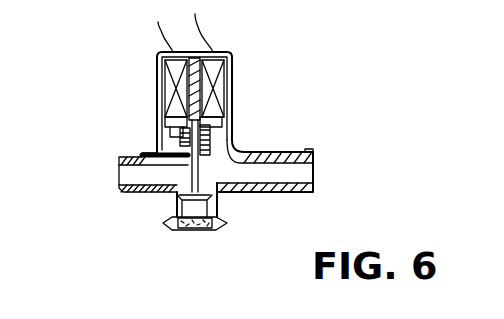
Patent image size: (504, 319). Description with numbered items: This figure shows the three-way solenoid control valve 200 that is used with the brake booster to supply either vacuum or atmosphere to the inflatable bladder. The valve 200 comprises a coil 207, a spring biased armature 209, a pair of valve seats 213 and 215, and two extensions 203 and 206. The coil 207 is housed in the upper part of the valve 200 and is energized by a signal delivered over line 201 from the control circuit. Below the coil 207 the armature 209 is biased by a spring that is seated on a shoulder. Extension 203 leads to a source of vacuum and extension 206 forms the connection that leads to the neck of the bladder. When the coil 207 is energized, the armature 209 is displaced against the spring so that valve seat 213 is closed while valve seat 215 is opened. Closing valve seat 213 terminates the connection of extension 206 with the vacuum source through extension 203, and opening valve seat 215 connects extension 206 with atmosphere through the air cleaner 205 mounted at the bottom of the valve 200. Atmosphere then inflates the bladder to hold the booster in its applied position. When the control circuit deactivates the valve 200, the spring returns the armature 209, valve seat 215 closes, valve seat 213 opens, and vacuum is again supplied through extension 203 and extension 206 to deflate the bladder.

The valve 200 is at (231, 90).
The line 201 is at (160, 33).
The extension 203 is at (296, 152).
The air cleaner 205 is at (173, 230).
The extension 206 is at (135, 196).
The coil 207 is at (165, 80).
The spring biased armature 209 is at (163, 133).
The valve seat 213 is at (210, 140).
The valve seat 215 is at (213, 210).